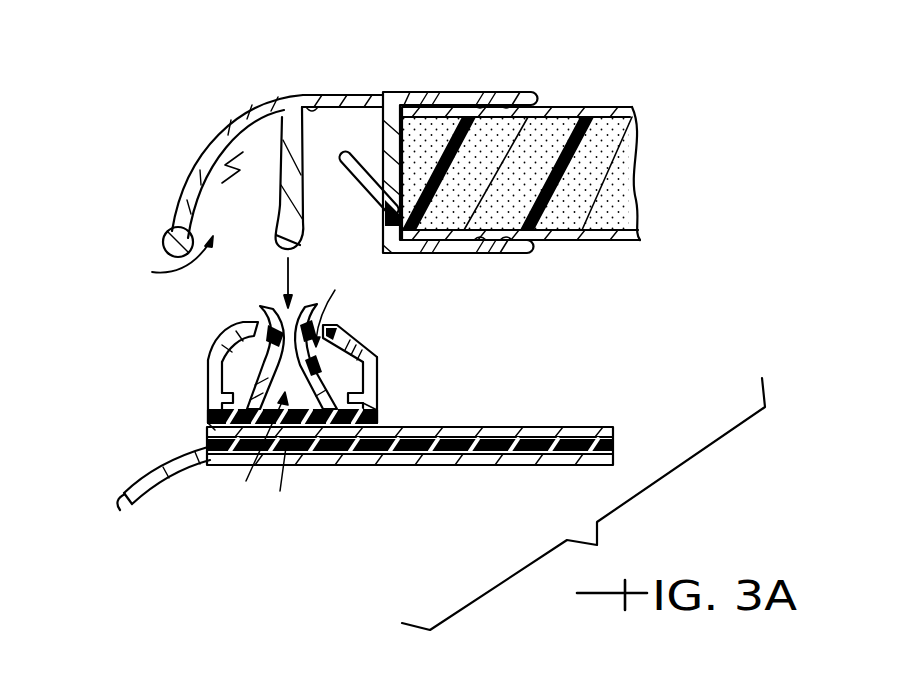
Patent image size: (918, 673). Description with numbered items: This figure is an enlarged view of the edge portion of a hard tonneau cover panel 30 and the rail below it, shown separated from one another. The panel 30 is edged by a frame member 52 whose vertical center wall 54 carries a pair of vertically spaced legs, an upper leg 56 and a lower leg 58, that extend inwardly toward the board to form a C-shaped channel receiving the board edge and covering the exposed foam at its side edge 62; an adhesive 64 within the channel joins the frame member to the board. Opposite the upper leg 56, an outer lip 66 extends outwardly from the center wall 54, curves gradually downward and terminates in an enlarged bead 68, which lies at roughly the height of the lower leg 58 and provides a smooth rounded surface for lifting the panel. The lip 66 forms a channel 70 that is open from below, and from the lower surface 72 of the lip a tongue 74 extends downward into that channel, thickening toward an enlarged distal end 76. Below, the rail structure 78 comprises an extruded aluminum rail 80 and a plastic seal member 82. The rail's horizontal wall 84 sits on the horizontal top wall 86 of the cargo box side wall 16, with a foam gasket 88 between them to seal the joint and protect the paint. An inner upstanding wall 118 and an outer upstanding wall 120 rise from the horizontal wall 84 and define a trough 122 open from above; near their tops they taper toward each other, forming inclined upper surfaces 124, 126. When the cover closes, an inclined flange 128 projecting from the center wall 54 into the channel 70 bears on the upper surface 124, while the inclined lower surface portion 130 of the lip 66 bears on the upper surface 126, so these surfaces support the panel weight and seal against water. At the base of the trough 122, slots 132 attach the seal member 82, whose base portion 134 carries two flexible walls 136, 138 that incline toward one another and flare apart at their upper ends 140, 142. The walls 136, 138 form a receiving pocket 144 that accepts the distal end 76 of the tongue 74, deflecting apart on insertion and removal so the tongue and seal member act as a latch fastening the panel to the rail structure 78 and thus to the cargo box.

The cargo box side wall 16 is at (143, 475).
The panel 30 is at (590, 98).
The frame member 52 is at (372, 86).
The vertical center wall 54 is at (381, 250).
The upper leg 56 is at (490, 90).
The lower leg 58 is at (514, 254).
The side edge 62 is at (407, 90).
The adhesive 64 is at (457, 93).
The outer lip 66 is at (257, 110).
The enlarged bead 68 is at (164, 240).
The channel 70 is at (155, 260).
The lower surface 72 is at (310, 93).
The tongue 74 is at (297, 167).
The enlarged distal end 76 is at (277, 220).
The rail structure 78 is at (200, 403).
The extruded aluminum rail 80 is at (207, 425).
The plastic seal member 82 is at (266, 370).
The horizontal wall 84 is at (528, 427).
The horizontal top wall 86 is at (413, 462).
The foam gasket 88 is at (311, 457).
The inner upstanding wall 118 is at (381, 373).
The outer upstanding wall 120 is at (209, 366).
The trough 122 is at (348, 306).
The inclined upper surface 124 is at (349, 326).
The inclined upper surface 126 is at (230, 336).
The inclined flange 128 is at (357, 150).
The inclined lower surface portion 130 is at (243, 142).
The slots 132 is at (380, 406).
The base portion 134 is at (281, 488).
The wall 136 is at (375, 350).
The wall 138 is at (216, 378).
The upper end 140 is at (300, 307).
The upper end 142 is at (256, 280).
The receiving pocket 144 is at (240, 450).